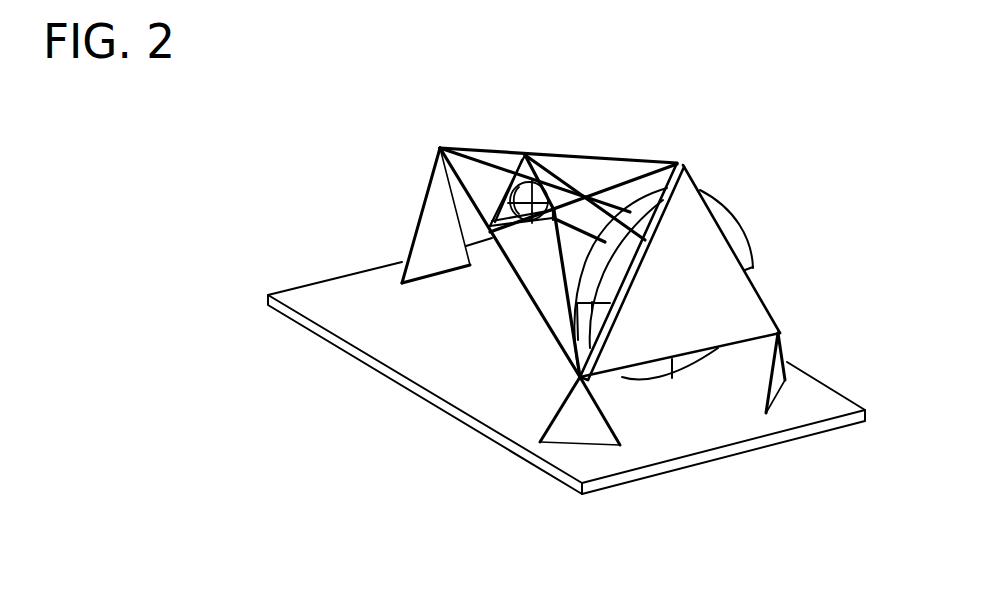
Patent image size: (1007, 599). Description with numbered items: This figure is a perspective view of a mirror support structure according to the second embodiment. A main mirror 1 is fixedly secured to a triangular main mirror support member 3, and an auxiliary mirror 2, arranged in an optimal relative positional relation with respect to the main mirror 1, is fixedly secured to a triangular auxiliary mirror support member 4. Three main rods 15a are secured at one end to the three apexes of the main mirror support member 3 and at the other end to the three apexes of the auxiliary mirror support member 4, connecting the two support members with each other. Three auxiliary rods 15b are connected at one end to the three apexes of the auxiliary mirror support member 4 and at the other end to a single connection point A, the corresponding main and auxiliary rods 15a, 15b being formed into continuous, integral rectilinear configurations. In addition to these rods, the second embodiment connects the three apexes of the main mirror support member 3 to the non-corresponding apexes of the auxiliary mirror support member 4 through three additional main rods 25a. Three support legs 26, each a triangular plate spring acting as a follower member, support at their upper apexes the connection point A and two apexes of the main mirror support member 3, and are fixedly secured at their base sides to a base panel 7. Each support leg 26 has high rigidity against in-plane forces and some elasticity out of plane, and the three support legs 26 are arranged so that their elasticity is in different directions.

The main mirror 1 is at (640, 203).
The auxiliary mirror 2 is at (547, 188).
The main mirror support member 3 is at (683, 217).
The auxiliary mirror support member 4 is at (512, 170).
The base panel 7 is at (807, 400).
The main rods 15a is at (620, 158).
The auxiliary rods 15b is at (477, 147).
The additional main rods 25a is at (567, 210).
The support legs 26 is at (435, 210).
The connection point A is at (438, 148).